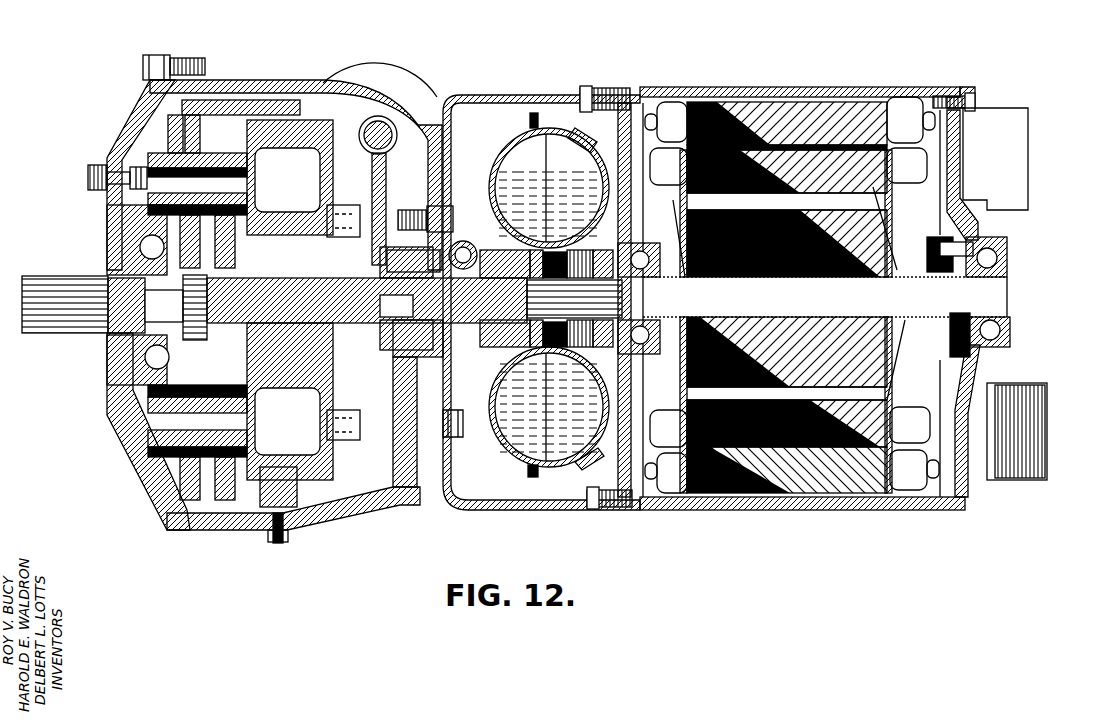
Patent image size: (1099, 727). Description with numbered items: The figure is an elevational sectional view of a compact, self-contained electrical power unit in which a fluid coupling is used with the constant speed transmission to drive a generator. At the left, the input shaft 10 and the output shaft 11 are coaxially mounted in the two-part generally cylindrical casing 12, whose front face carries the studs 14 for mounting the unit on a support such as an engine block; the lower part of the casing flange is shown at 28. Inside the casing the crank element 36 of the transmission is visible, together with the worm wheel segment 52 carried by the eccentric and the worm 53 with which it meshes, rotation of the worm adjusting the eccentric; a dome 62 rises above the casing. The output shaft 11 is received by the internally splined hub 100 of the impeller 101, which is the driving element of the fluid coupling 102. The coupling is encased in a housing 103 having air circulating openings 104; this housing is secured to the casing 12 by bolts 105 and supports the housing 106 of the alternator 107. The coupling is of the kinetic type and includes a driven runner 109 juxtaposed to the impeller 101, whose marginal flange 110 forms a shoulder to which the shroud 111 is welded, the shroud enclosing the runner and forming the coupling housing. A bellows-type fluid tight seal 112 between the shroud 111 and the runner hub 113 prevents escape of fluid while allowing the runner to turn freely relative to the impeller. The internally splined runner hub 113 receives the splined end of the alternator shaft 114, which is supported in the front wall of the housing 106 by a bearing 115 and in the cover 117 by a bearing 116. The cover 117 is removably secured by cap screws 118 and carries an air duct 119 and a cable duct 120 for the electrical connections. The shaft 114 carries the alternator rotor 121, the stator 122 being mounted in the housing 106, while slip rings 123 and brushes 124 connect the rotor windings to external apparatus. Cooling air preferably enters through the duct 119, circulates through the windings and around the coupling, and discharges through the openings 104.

The input shaft 10 is at (80, 276).
The output shaft 11 is at (490, 353).
The casing 12 is at (272, 85).
The studs 14 is at (100, 165).
The housing flange 28 is at (158, 470).
The crank element 36 is at (317, 153).
The worm wheel segment 52 is at (372, 176).
The worm 53 is at (363, 122).
The dome 62 is at (413, 88).
The internally splined hub 100 is at (462, 205).
The impeller 101 is at (508, 148).
The fluid coupling 102 is at (519, 126).
The housing 103 is at (480, 92).
The air circulating openings 104 is at (560, 90).
The bolts 105 is at (468, 432).
The alternator housing 106 is at (720, 87).
The alternator 107 is at (820, 108).
The driven runner 109 is at (467, 272).
The marginal flange 110 is at (528, 475).
The shroud 111 is at (560, 473).
The fluid tight seal 112 is at (582, 365).
The runner hub 113 is at (545, 250).
The alternator shaft 114 is at (812, 306).
The bearing 115 is at (628, 243).
The bearing 116 is at (1000, 248).
The cover 117 is at (962, 165).
The cap screws 118 is at (973, 100).
The air duct 119 is at (1020, 138).
The cable duct 120 is at (1045, 433).
The alternator rotor 121 is at (895, 192).
The stator 122 is at (875, 108).
The slip rings 123 is at (615, 420).
The brushes 124 is at (620, 210).